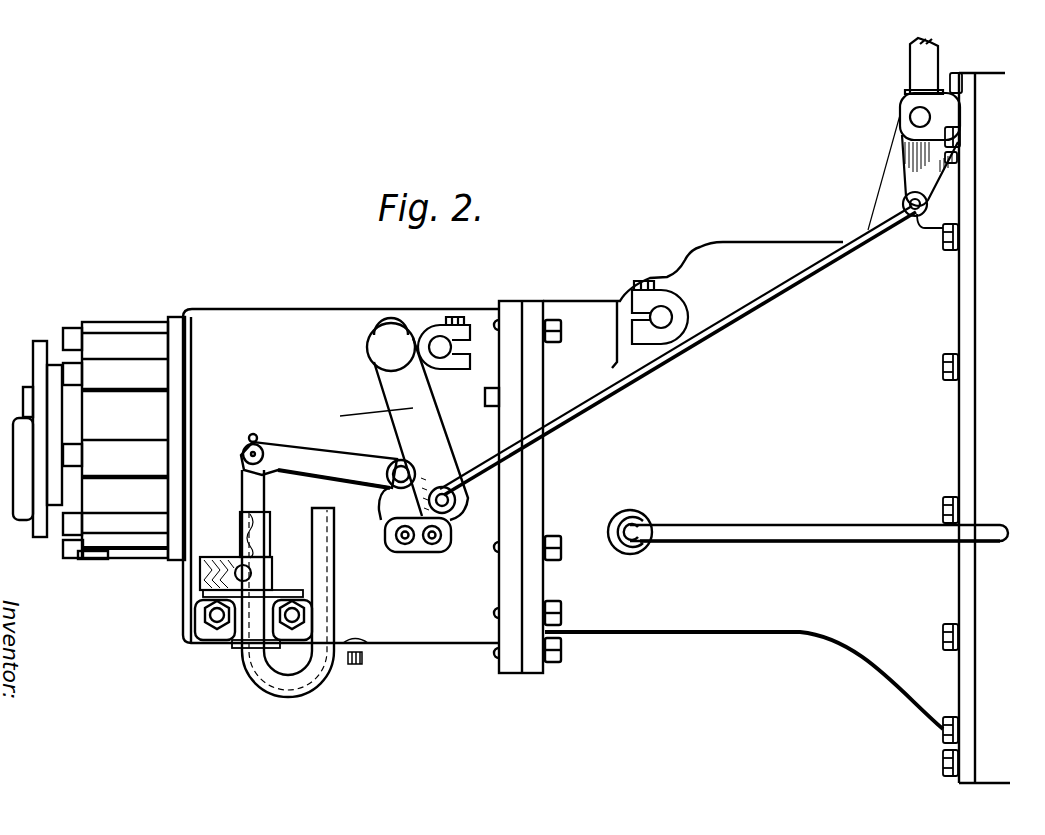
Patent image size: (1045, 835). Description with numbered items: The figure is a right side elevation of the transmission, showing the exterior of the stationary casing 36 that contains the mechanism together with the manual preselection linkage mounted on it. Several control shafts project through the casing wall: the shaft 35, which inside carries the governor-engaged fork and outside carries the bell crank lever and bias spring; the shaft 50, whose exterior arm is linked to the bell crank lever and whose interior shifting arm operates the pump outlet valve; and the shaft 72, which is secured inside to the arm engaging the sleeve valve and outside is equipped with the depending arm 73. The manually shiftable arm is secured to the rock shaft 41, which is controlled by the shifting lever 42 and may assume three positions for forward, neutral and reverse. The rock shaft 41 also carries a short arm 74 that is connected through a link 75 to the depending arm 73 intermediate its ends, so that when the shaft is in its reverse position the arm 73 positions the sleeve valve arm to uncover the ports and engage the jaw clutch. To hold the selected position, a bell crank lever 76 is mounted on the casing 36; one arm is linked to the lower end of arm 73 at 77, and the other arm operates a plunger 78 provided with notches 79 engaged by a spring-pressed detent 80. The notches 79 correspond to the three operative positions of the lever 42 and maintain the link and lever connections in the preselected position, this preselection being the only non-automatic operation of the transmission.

The shaft 35 is at (664, 316).
The stationary casing 36 is at (511, 428).
The rock shaft 41 is at (918, 118).
The shifting lever 42 is at (920, 63).
The shaft 50 is at (439, 346).
The shaft 72 is at (389, 346).
The depending arm 73 is at (437, 437).
The short arm 74 is at (910, 176).
The link 75 is at (702, 338).
The bell crank lever 76 is at (345, 460).
The link connection 77 is at (422, 542).
The plunger 78 is at (263, 490).
The notches 79 is at (243, 527).
The spring-pressed detent 80 is at (235, 565).